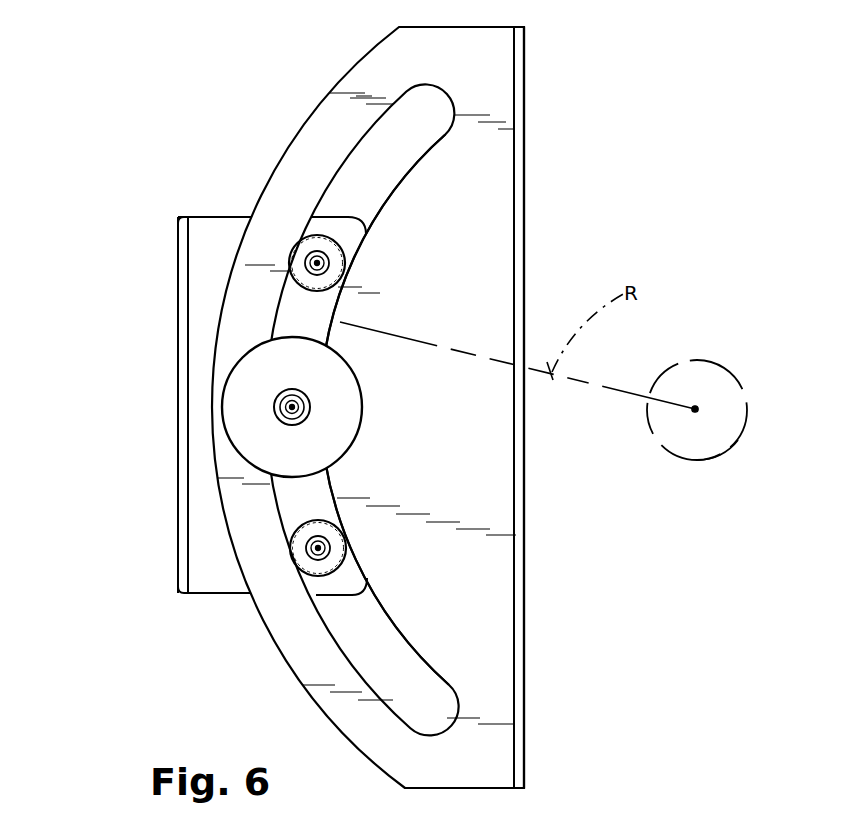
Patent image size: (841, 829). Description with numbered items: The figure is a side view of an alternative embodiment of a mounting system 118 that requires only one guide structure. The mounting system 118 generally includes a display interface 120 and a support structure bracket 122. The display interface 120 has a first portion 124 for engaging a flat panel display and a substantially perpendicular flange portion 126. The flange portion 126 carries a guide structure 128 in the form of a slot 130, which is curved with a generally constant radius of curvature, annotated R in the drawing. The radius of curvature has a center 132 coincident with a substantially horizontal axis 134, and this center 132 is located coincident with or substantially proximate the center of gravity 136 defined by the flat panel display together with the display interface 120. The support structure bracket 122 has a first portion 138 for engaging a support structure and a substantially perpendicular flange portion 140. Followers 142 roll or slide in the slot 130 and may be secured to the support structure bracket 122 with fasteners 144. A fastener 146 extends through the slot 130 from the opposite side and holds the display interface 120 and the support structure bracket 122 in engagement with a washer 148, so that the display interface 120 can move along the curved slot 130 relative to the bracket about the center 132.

The mounting system 118 is at (150, 566).
The display interface 120 is at (522, 568).
The support structure bracket 122 is at (178, 350).
The first portion 124 is at (524, 652).
The flange portion 126 is at (493, 161).
The guide structure 128 is at (410, 155).
The slot 130 is at (372, 183).
The center 132 is at (695, 407).
The horizontal axis 134 is at (695, 407).
The center of gravity 136 is at (726, 452).
The first portion 138 is at (177, 230).
The flange portion 140 is at (204, 215).
The followers 142 is at (291, 270).
The fasteners 144 is at (316, 263).
The fastener 146 is at (293, 407).
The washer 148 is at (235, 408).